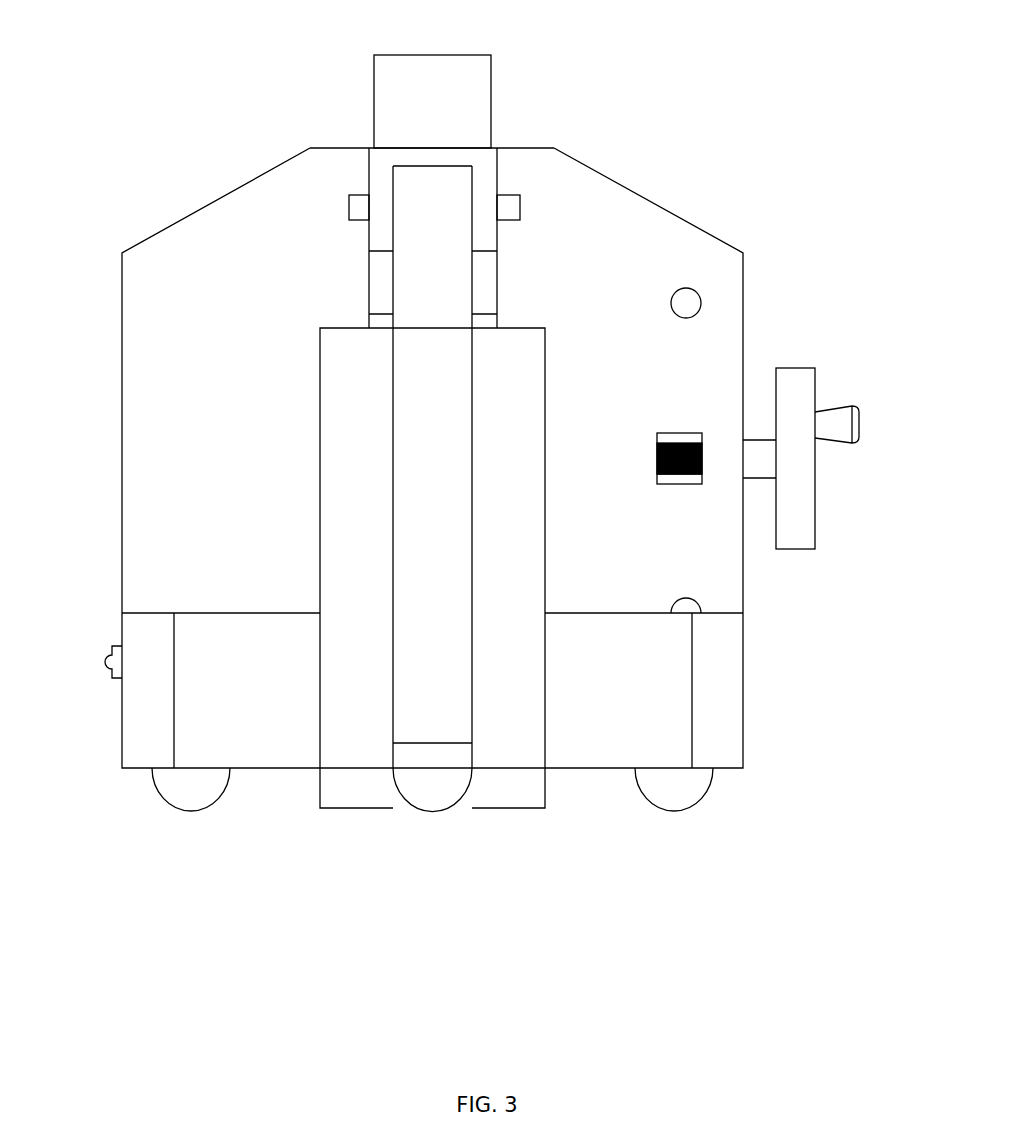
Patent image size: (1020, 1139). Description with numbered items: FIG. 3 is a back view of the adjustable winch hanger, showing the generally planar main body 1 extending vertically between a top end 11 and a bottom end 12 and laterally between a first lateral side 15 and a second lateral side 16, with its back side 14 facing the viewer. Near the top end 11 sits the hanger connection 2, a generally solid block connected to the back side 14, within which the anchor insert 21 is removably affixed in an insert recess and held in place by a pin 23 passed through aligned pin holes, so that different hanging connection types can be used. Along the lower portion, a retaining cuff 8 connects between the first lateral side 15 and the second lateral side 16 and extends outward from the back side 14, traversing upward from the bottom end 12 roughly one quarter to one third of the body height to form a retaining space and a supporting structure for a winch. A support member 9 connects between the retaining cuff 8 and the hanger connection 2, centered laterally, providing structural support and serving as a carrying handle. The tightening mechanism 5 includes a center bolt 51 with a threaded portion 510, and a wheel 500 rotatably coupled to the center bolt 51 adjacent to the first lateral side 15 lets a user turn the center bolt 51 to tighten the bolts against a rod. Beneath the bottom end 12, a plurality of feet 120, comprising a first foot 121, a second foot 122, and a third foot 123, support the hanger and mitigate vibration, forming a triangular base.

The main body 1 is at (642, 206).
The hanger connection 2 is at (331, 170).
The tightening mechanism 5 is at (829, 537).
The retaining cuff 8 is at (600, 622).
The support member 9 is at (402, 440).
The top end 11 is at (526, 116).
The bottom end 12 is at (600, 802).
The back side 14 is at (308, 299).
The first lateral side 15 is at (766, 322).
The second lateral side 16 is at (96, 322).
The anchor insert 21 is at (399, 63).
The pin 23 is at (520, 206).
The center bolt 51 is at (677, 468).
The plurality of feet 120 is at (456, 833).
The first foot 121 is at (682, 806).
The second foot 122 is at (177, 796).
The third foot 123 is at (418, 796).
The wheel 500 is at (807, 474).
The threaded portion 510 is at (678, 476).